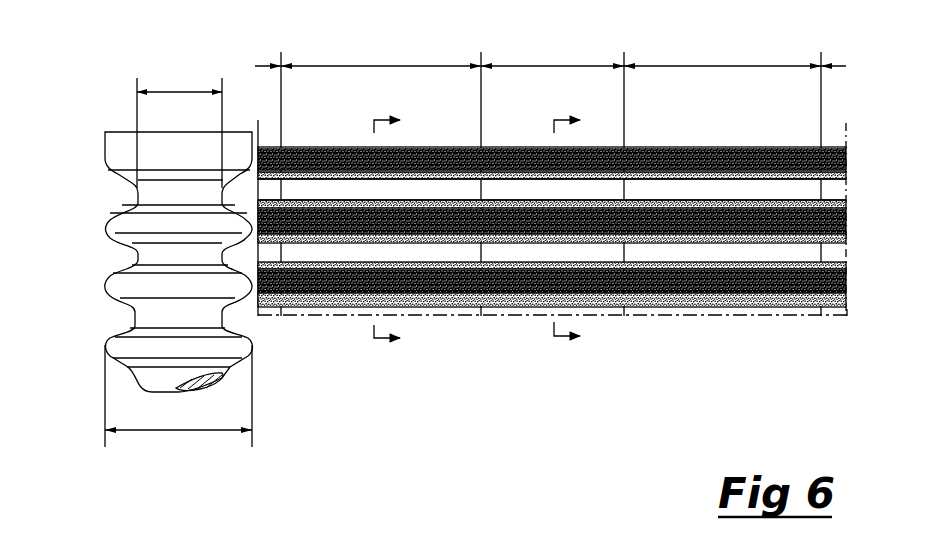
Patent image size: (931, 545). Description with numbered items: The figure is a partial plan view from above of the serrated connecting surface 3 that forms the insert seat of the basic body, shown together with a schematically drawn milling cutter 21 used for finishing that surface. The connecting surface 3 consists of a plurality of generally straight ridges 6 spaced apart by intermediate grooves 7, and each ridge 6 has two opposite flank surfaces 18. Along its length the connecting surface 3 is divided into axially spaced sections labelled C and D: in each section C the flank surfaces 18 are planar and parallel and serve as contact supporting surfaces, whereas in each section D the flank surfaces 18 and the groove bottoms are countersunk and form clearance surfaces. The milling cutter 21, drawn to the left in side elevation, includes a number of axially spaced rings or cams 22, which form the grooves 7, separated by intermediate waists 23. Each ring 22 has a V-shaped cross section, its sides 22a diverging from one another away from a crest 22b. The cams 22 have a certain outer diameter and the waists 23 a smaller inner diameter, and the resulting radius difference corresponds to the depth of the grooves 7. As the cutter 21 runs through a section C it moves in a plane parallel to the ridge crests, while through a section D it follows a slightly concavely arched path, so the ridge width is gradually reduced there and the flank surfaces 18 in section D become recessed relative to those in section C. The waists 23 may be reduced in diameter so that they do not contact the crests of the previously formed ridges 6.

The milling cutter 21 is at (109, 114).
The rings 22 is at (124, 242).
The sides of the ring 22a is at (120, 205).
The crest of the ring 22b is at (113, 227).
The waists 23 is at (125, 317).
The connecting surface 3 is at (551, 217).
The ridges 6 is at (322, 190).
The grooves 7 is at (320, 222).
The flank surfaces 18 is at (525, 197).